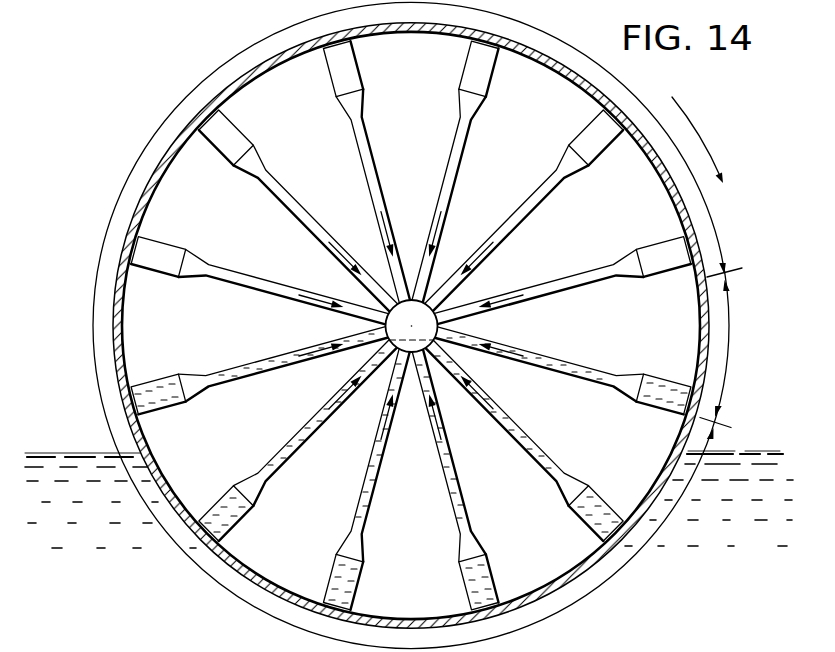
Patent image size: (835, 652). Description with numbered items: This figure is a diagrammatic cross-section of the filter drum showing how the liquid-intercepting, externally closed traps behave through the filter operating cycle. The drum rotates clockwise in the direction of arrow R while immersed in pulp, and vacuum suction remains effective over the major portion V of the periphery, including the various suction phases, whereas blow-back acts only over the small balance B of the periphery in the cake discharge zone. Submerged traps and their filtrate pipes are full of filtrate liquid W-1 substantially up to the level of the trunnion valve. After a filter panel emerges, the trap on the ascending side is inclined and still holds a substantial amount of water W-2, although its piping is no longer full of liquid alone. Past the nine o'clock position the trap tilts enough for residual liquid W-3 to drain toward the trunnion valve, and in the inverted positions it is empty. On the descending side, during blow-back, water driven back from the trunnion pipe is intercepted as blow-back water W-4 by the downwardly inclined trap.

The major portion of the drum periphery V is at (111, 221).
The arrow indicating direction of drum rotation R is at (699, 127).
The blow-back portion of the drum periphery B is at (732, 312).
The filtrate liquid W-1 is at (301, 437).
The water contained in the trap W-2 is at (171, 389).
The residual liquid in the trap W-3 is at (175, 274).
The blow-back water W-4 is at (662, 404).